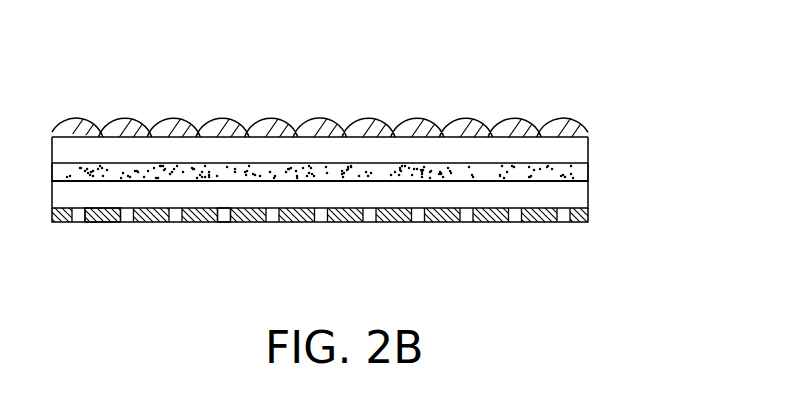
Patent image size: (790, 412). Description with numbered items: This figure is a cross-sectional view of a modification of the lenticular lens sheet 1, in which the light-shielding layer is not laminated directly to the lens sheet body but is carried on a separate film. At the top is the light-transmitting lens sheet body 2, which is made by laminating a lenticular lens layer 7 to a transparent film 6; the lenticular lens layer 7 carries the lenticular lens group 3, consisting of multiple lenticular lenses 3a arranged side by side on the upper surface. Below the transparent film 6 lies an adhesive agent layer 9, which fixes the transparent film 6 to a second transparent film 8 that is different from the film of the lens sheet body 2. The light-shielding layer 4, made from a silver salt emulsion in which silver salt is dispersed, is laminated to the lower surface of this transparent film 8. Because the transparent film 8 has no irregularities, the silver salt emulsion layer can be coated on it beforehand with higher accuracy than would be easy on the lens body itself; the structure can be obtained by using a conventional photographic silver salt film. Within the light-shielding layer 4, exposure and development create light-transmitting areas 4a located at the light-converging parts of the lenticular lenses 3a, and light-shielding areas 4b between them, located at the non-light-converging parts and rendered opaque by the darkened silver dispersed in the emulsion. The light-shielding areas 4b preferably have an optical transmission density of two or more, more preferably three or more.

The lenticular lens sheet 1 is at (621, 72).
The lens sheet body 2 is at (662, 88).
The lenticular lens group 3 is at (124, 95).
The lenticular lens 3a is at (122, 117).
The lenticular lens layer 7 is at (579, 125).
The transparent film 6 is at (577, 150).
The adhesive agent layer 9 is at (583, 170).
The transparent film 8 is at (580, 193).
The light-shielding layer 4 is at (587, 213).
The light-transmitting area 4a is at (222, 222).
The light-shielding area 4b is at (102, 222).